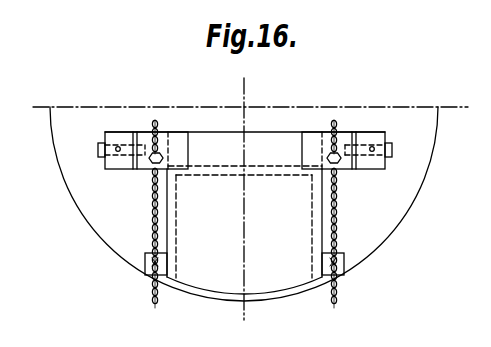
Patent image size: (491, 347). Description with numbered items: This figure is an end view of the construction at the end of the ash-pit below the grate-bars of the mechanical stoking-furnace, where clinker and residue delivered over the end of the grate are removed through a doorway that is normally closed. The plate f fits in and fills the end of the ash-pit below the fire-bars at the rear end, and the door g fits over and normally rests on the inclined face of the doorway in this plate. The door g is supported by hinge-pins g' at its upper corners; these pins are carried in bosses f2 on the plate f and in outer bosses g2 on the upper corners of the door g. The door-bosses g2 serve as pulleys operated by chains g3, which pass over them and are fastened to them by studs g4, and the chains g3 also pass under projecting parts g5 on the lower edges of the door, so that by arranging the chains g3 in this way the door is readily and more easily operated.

The plate f is at (70, 170).
The bosses f2 is at (109, 136).
The hinge-pins g' is at (242, 150).
The outer bosses g2 is at (152, 167).
The chains g3 is at (153, 213).
The studs g4 is at (163, 157).
The projecting parts g5 is at (152, 265).
The door g is at (244, 226).